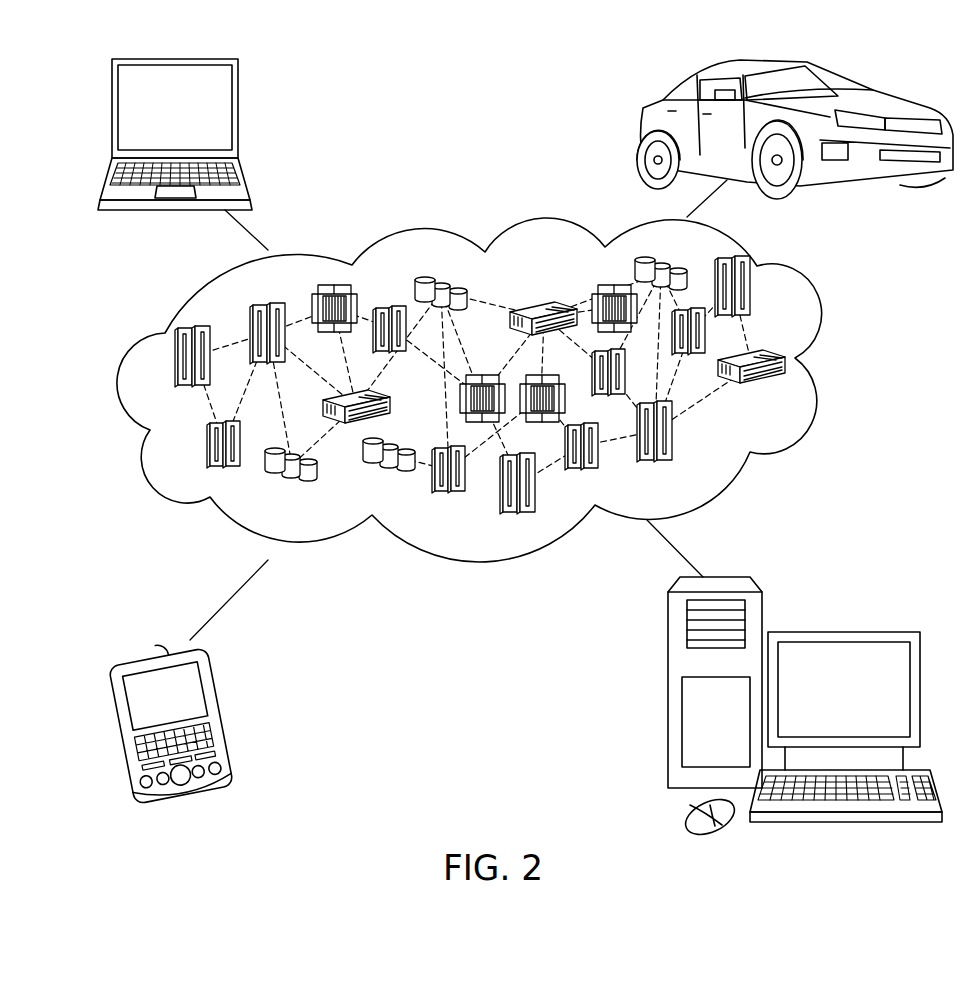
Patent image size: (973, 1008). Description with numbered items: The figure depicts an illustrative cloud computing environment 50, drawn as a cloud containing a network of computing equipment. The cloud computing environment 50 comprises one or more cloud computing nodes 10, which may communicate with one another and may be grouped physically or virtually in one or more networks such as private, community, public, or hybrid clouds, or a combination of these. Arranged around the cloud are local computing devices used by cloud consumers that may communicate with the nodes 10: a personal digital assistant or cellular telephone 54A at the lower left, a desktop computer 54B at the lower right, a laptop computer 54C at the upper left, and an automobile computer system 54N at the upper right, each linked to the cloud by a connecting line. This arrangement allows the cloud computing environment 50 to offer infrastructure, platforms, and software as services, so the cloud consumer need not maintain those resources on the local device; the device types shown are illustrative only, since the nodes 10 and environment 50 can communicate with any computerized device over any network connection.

The cloud computing node 10 is at (790, 395).
The cloud computing environment 50 is at (505, 390).
The personal digital assistant or cellular telephone 54A is at (228, 713).
The desktop computer 54B is at (842, 632).
The laptop computer 54C is at (237, 112).
The automobile computer system 54N is at (641, 130).